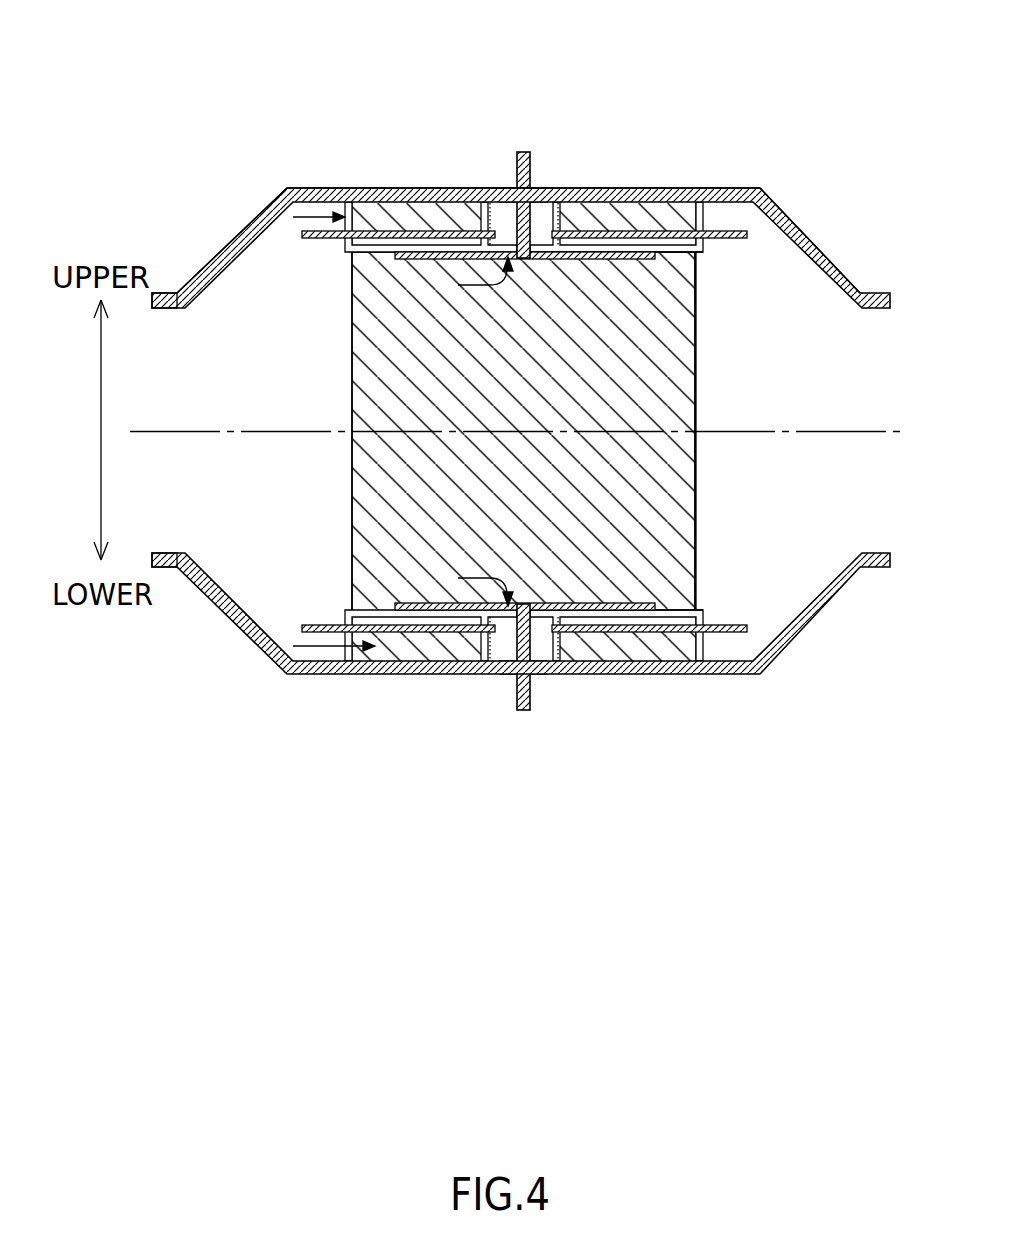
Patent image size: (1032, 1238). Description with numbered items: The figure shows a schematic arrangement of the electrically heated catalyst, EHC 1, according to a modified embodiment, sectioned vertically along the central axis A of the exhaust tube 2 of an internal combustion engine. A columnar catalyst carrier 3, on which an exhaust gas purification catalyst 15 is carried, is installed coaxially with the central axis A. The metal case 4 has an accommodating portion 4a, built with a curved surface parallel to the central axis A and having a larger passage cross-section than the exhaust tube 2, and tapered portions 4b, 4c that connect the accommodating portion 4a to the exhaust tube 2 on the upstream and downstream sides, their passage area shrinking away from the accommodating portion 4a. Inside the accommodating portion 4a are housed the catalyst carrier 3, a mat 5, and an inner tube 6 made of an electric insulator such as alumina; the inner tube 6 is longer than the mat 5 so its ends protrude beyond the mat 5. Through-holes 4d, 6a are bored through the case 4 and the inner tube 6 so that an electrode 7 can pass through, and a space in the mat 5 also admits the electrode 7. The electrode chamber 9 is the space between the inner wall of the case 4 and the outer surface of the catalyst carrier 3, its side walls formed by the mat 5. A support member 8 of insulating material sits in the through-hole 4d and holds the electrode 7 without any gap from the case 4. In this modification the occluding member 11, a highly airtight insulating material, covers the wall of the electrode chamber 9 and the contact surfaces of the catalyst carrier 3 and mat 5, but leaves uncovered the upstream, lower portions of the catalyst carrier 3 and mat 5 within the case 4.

The EHC 1 is at (799, 78).
The exhaust tube 2 is at (160, 292).
The catalyst carrier 3 is at (352, 360).
The case 4 is at (378, 187).
The accommodating portion 4a is at (680, 187).
The tapered portion 4b is at (238, 238).
The tapered portion 4c is at (812, 240).
The through-hole 4d is at (505, 187).
The mat 5 is at (683, 217).
The inner tube 6 is at (345, 249).
The through-hole 6a is at (583, 187).
The electrode 7 is at (522, 150).
The support member 8 is at (537, 187).
The electrode chamber 9 is at (488, 186).
The occluding member 11 is at (440, 186).
The exhaust gas purification catalyst 15 is at (680, 362).
The central axis A is at (813, 432).